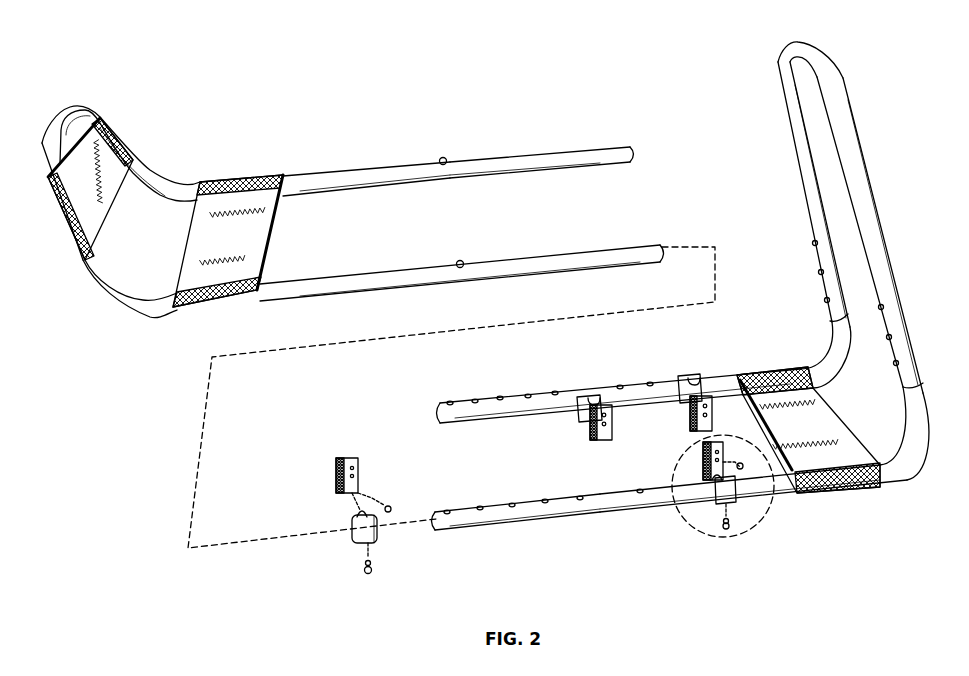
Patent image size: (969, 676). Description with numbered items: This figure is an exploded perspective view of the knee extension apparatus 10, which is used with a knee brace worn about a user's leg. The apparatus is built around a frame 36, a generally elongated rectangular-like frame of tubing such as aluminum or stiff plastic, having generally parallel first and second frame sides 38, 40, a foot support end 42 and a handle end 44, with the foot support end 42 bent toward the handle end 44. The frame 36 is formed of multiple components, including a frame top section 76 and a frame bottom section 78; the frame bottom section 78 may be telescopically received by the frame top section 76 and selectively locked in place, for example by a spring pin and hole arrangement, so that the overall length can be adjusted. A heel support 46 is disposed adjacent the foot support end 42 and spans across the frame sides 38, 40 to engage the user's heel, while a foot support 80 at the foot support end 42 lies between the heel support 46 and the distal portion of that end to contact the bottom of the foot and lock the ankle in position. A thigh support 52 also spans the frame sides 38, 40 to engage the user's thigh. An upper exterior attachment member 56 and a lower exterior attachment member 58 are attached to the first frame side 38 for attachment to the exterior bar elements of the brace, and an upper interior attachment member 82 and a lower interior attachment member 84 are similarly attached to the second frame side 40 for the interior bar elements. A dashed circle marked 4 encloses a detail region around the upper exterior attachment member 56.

The knee extension apparatus 10 is at (254, 63).
The foot support end 42 is at (58, 122).
The foot support 80 is at (117, 137).
The heel support 46 is at (237, 235).
The frame bottom section 78 is at (332, 177).
The frame 36 is at (502, 157).
The handle end 44 is at (850, 153).
The thigh support 52 is at (810, 428).
The second frame side 40 is at (486, 400).
The first frame side 38 is at (486, 518).
The frame top section 76 is at (568, 518).
The lower interior attachment member 84 is at (600, 428).
The upper interior attachment member 82 is at (697, 421).
The upper exterior attachment member 56 is at (702, 456).
The lower exterior attachment member 58 is at (336, 472).
The detail area 4 is at (764, 512).